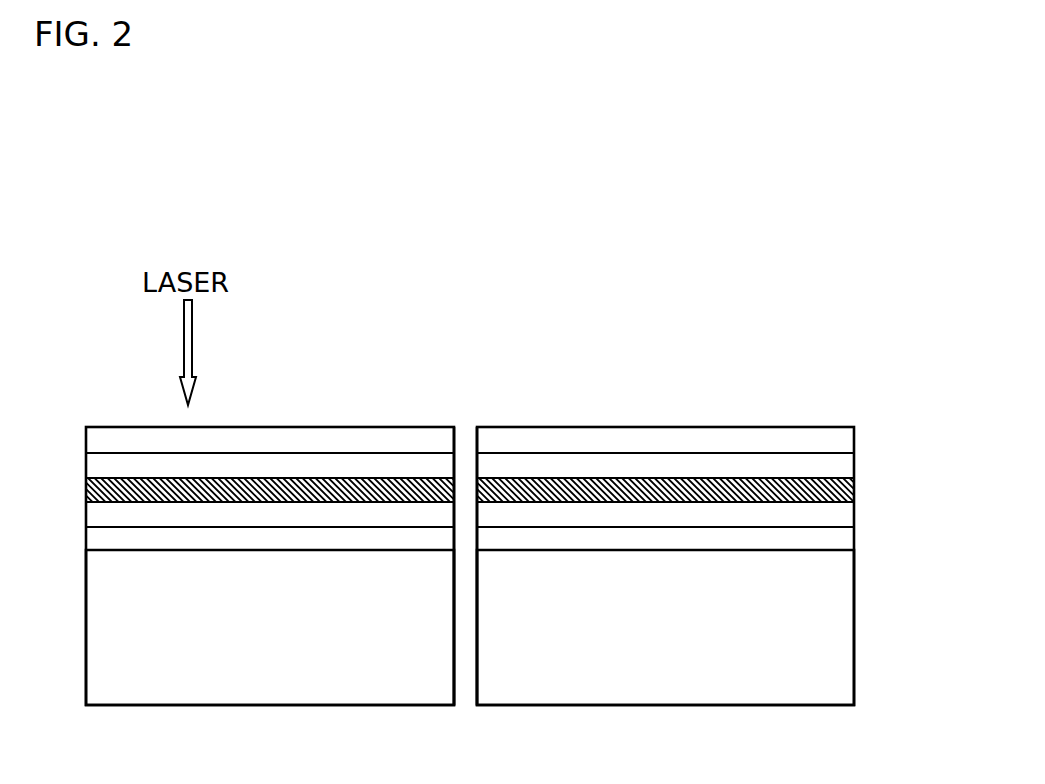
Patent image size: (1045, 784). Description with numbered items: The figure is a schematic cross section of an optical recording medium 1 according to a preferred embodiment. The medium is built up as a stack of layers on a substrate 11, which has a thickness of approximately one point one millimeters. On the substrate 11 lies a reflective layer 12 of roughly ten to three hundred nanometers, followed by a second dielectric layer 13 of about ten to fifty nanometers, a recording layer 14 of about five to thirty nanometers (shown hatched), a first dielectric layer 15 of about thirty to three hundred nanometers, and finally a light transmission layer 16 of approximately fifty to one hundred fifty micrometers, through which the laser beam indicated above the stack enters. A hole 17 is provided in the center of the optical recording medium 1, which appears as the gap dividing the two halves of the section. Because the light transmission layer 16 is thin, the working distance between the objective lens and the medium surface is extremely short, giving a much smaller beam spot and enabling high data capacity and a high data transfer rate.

The optical recording medium 1 is at (676, 290).
The substrate 11 is at (855, 625).
The reflective layer 12 is at (855, 539).
The second dielectric layer 13 is at (855, 516).
The recording layer 14 is at (855, 490).
The first dielectric layer 15 is at (855, 466).
The light transmission layer 16 is at (855, 442).
The hole 17 is at (464, 712).